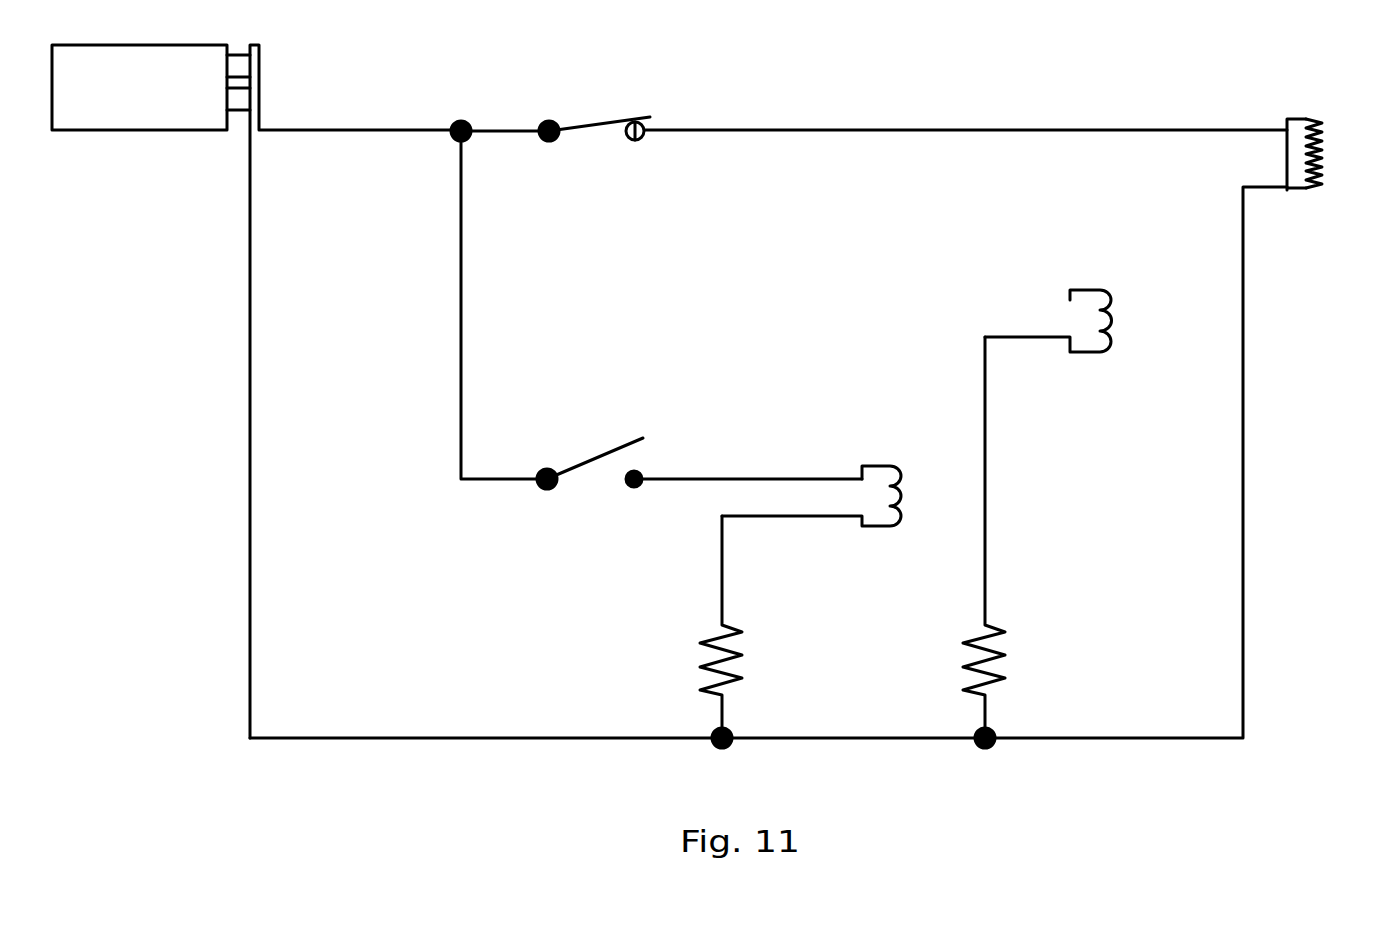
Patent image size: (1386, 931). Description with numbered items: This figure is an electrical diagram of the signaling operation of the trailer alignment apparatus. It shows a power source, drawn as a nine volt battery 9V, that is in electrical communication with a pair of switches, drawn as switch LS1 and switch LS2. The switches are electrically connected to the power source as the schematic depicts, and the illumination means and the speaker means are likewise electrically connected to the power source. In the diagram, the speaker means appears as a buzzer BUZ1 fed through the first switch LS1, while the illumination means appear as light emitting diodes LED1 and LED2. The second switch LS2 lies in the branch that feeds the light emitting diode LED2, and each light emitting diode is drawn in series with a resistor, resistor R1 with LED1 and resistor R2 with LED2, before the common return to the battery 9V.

The 9 volt battery 9V is at (256, 391).
The limit switch 1 LS1 is at (555, 96).
The limit switch 2 LS2 is at (699, 431).
The buzzer 1 BUZ1 is at (1323, 127).
The light emitting diode 1 LED1 is at (1079, 283).
The light emitting diode 2 LED2 is at (842, 464).
The resistor 1 R1 is at (1020, 542).
The resistor 2 R2 is at (761, 632).